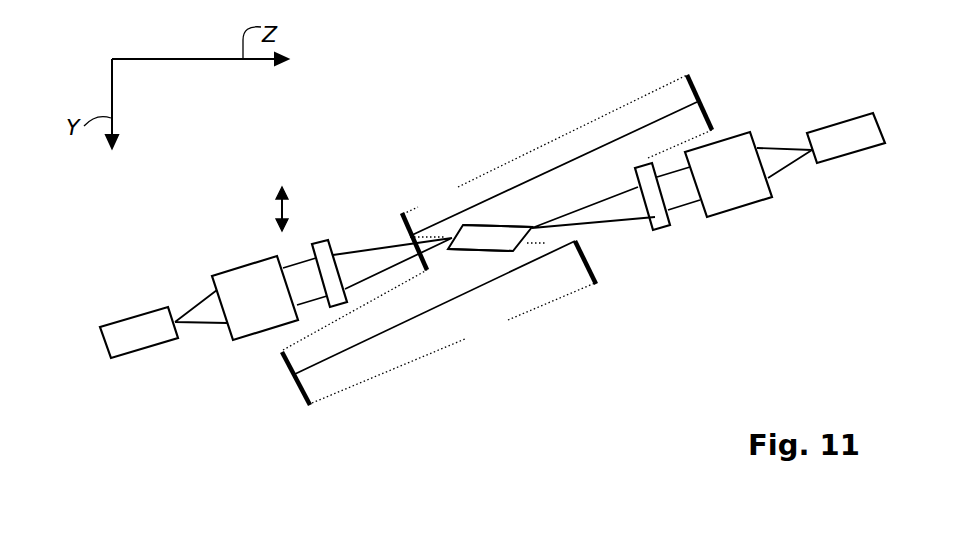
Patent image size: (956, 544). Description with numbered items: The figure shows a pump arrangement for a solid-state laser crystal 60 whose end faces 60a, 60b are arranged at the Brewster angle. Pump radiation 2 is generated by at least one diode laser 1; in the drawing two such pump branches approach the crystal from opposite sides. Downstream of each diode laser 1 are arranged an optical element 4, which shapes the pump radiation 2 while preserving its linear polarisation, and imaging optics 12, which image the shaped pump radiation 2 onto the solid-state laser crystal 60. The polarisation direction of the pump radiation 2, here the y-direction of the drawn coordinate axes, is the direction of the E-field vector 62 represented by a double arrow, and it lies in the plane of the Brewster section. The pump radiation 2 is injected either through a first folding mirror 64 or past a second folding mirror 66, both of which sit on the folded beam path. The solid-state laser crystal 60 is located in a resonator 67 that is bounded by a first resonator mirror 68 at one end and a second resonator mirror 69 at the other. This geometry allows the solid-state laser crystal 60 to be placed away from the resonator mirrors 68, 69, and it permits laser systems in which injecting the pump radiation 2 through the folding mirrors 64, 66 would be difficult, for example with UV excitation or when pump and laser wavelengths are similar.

The diode laser 1 is at (127, 318).
The pump radiation 2 is at (191, 325).
The optical element 4 is at (233, 271).
The imaging optics 12 is at (315, 242).
The solid-state laser crystal 60 is at (452, 250).
The end face 60a is at (462, 226).
The end face 60b is at (514, 251).
The E-field vector 62 is at (278, 210).
The first folding mirror 64 is at (430, 269).
The second folding mirror 66 is at (596, 284).
The resonator 67 is at (470, 340).
The first resonator mirror 68 is at (295, 373).
The second resonator mirror 69 is at (699, 97).